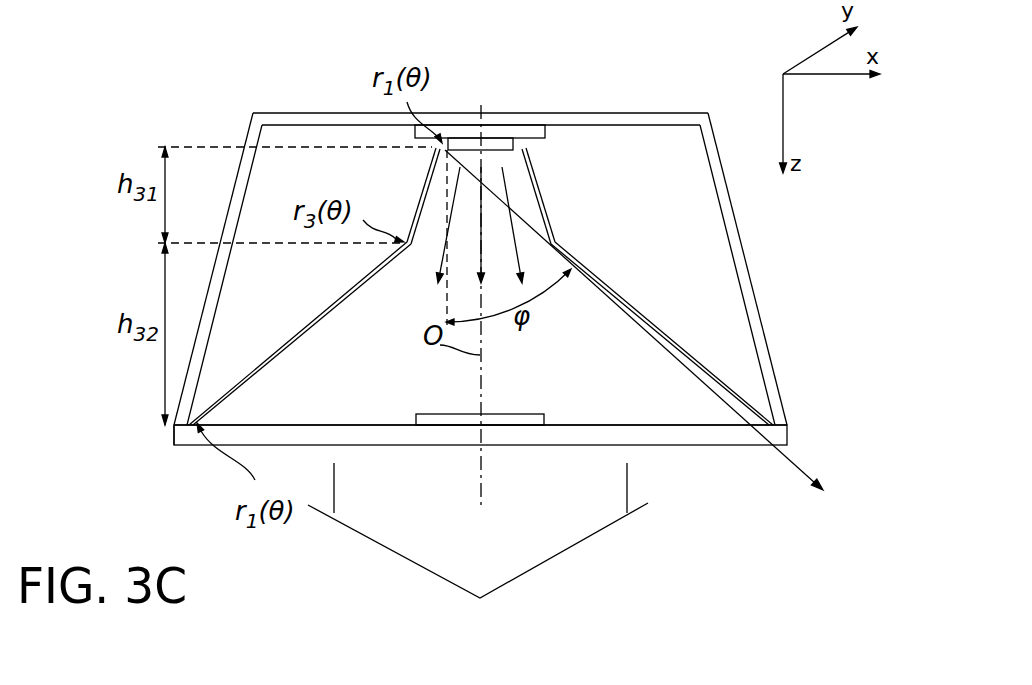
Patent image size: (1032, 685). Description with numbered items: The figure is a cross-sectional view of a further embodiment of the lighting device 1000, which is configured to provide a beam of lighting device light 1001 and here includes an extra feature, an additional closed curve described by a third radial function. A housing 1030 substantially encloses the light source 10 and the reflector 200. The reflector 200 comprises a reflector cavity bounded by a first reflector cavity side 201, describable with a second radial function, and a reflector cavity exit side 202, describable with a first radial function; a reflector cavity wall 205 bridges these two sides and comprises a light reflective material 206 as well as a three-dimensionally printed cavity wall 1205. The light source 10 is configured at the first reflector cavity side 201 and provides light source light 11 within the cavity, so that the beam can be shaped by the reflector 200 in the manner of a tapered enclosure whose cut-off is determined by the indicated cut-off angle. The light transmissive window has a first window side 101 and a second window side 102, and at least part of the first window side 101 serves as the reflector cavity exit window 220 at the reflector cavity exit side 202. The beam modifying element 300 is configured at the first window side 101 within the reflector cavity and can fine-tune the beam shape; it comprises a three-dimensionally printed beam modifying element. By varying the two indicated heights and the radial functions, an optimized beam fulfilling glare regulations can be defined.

The lighting device 1000 is at (417, 212).
The housing 1030 is at (653, 118).
The reflector 200 is at (689, 297).
The reflector cavity exit side 202 is at (597, 425).
The first window side 101 is at (318, 425).
The second window side 102 is at (188, 447).
The first reflector cavity side 201 is at (463, 125).
The light source 10 is at (502, 138).
The light source light 11 is at (448, 220).
The reflector cavity wall 205 is at (662, 309).
The light reflective material 206 is at (662, 309).
The 3D-printed cavity wall 1205 is at (620, 242).
The beam modifying element 300 is at (531, 405).
The reflector cavity exit window 220 is at (750, 518).
The lighting device light 1001 is at (572, 546).